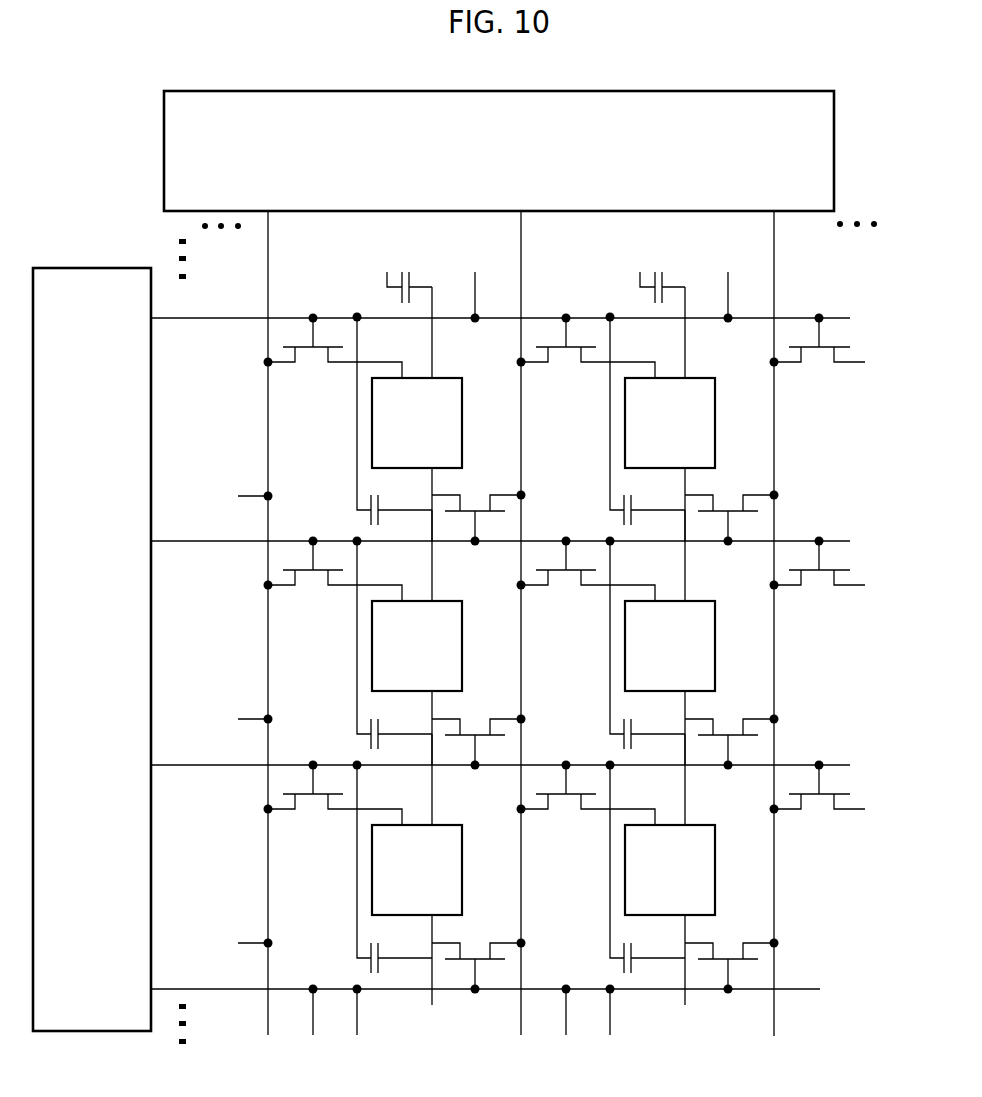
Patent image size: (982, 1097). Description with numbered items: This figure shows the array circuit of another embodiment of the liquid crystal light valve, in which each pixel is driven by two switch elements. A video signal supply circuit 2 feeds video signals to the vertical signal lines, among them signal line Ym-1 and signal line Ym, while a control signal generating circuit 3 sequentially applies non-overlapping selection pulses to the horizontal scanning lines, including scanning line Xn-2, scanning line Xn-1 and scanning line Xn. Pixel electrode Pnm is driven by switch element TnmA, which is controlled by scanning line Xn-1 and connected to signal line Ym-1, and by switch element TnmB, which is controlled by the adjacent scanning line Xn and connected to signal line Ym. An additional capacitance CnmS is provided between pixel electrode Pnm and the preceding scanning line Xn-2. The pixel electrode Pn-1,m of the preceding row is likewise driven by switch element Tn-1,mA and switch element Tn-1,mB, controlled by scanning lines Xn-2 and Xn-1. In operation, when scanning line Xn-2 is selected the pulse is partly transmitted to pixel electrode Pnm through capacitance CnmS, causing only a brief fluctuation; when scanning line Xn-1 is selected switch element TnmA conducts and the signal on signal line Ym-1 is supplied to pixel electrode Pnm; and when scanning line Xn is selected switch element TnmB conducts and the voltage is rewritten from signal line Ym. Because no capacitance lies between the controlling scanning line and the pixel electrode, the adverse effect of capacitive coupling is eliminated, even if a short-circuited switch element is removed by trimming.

The video signal supply circuit 2 is at (659, 91).
The control signal generating circuit 3 is at (110, 268).
The signal line Ym-1 is at (291, 623).
The signal line Ym is at (539, 623).
The scanning line Xn-2 is at (500, 303).
The scanning line Xn-1 is at (500, 526).
The scanning line Xn is at (500, 750).
The switch element Tn-1,mA is at (333, 352).
The switch element TnmA is at (333, 575).
The switch element Tn-1,mB is at (479, 510).
The switch element TnmB is at (479, 734).
The additional capacitance CnmS is at (361, 422).
The pixel electrode Pn-1,m is at (417, 423).
The pixel electrode Pnm is at (417, 646).